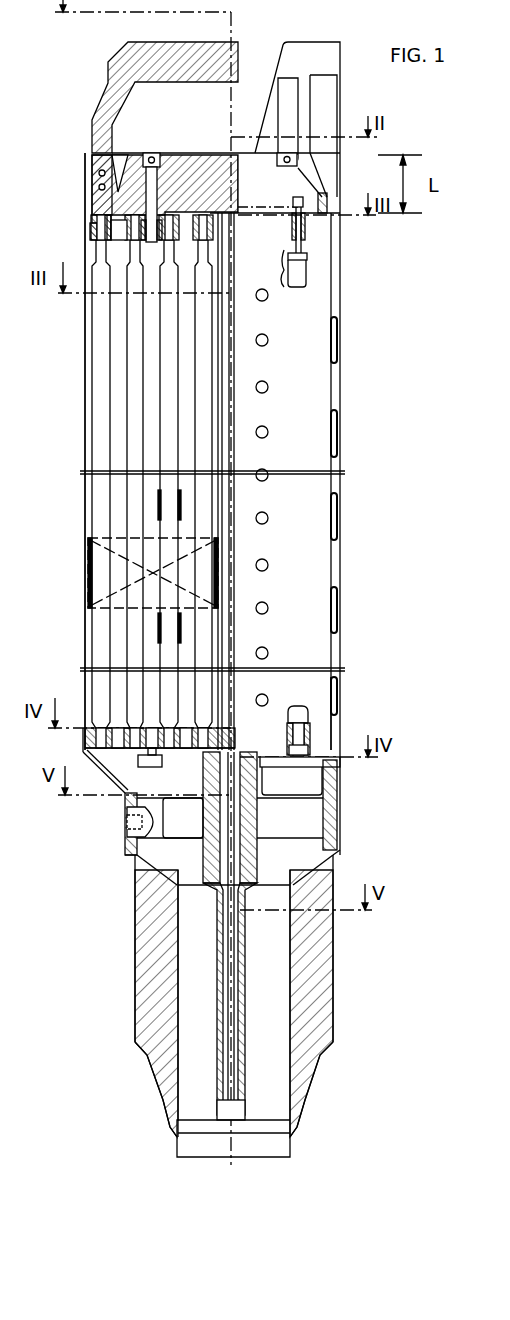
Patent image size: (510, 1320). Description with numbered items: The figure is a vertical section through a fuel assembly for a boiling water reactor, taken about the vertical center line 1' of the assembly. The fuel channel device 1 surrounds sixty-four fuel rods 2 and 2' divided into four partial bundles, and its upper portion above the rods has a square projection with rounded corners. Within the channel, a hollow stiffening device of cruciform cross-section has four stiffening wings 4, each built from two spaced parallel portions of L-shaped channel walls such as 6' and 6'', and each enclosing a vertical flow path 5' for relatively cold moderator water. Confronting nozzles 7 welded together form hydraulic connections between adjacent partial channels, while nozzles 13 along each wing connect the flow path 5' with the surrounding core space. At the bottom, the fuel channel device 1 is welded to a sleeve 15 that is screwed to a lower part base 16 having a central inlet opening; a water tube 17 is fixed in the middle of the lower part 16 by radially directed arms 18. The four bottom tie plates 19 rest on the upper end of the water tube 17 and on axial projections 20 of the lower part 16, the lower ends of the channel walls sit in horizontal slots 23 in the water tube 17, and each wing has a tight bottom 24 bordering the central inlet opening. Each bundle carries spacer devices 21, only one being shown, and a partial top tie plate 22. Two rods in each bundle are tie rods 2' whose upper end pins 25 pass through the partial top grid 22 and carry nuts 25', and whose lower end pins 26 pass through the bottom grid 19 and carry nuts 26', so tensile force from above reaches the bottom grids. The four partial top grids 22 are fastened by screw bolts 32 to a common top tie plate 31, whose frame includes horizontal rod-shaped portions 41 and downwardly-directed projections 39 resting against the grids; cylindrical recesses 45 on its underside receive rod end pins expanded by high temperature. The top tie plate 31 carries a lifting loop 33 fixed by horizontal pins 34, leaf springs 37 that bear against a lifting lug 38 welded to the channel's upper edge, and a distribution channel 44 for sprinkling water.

The fuel channel device 1 is at (137, 451).
The vertical center line 1' is at (259, 588).
The fuel rods 2 is at (132, 481).
The tie rods 2' is at (327, 500).
The stiffening wings 4 is at (312, 400).
The flow path 5' is at (255, 542).
The channel wall 6' is at (348, 550).
The channel wall 6'' is at (257, 481).
The nozzles 7 is at (267, 384).
The nozzles 13 is at (338, 390).
The sleeve 15 is at (127, 808).
The lower part base 16 is at (318, 992).
The water tube 17 is at (244, 967).
The radially directed arms 18 is at (330, 840).
The bottom tie plate 19 is at (120, 752).
The axial projections 20 is at (158, 773).
The spacer devices 21 is at (118, 552).
The partial top tie plate 22 is at (120, 235).
The horizontal slots 23 is at (262, 762).
The tight bottom 24 is at (322, 772).
The upper end pins 25 is at (336, 260).
The nuts 25' is at (353, 191).
The lower end pins 26 is at (347, 729).
The nuts 26' is at (273, 740).
The top tie plate 31 is at (200, 160).
The screw bolts 32 is at (150, 190).
The lifting loop 33 is at (232, 38).
The horizontal pins 34 is at (99, 186).
The leaf springs 37 is at (285, 110).
The lifting lug 38 is at (302, 50).
The downwardly-directed projections 39 is at (93, 232).
The rod-shaped portions 41 is at (322, 215).
The distribution channel 44 is at (318, 178).
The cylindrical recesses 45 is at (95, 218).